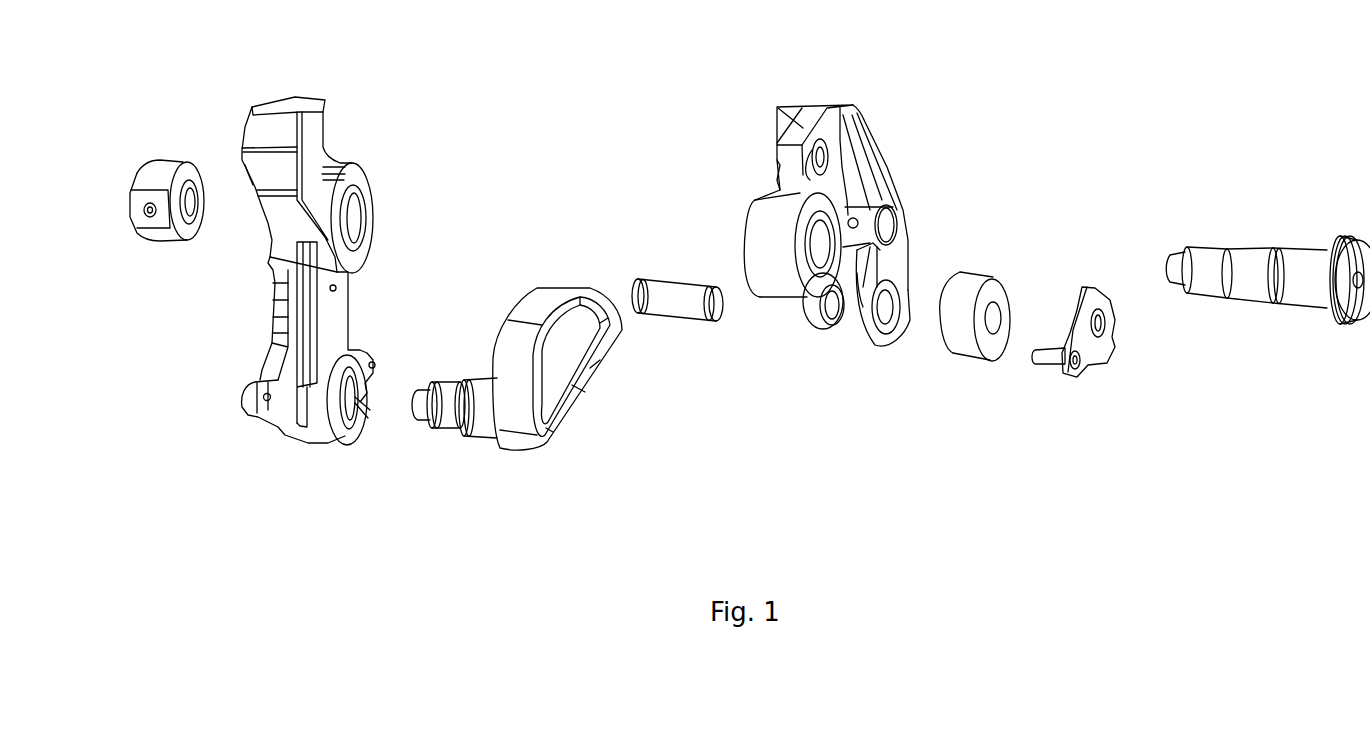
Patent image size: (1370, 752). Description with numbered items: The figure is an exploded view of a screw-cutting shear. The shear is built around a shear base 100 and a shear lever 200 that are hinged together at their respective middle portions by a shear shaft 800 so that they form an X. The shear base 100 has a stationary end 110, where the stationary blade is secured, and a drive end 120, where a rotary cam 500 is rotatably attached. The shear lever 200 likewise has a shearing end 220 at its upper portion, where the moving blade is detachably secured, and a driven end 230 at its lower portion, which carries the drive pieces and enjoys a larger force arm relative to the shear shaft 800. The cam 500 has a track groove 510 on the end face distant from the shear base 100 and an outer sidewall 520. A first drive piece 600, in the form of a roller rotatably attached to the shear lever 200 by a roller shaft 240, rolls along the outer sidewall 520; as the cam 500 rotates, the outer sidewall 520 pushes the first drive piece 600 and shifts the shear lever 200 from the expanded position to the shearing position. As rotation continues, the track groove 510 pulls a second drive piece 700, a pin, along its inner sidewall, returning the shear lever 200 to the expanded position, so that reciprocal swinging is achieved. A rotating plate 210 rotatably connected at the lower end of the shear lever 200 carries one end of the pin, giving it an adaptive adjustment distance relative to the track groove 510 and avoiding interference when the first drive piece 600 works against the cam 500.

The shear base 100 is at (399, 160).
The stationary end 110 is at (300, 97).
The drive end 120 is at (325, 420).
The shear lever 200 is at (912, 157).
The rotating plate 210 is at (1100, 358).
The shearing end 220 is at (803, 128).
The driven end 230 is at (868, 347).
The roller shaft 240 is at (693, 313).
The cam 500 is at (586, 446).
The track groove 510 is at (590, 365).
The outer sidewall 520 is at (508, 403).
The first drive piece 600 is at (965, 342).
The second drive piece 700 is at (1048, 368).
The shear shaft 800 is at (1240, 297).